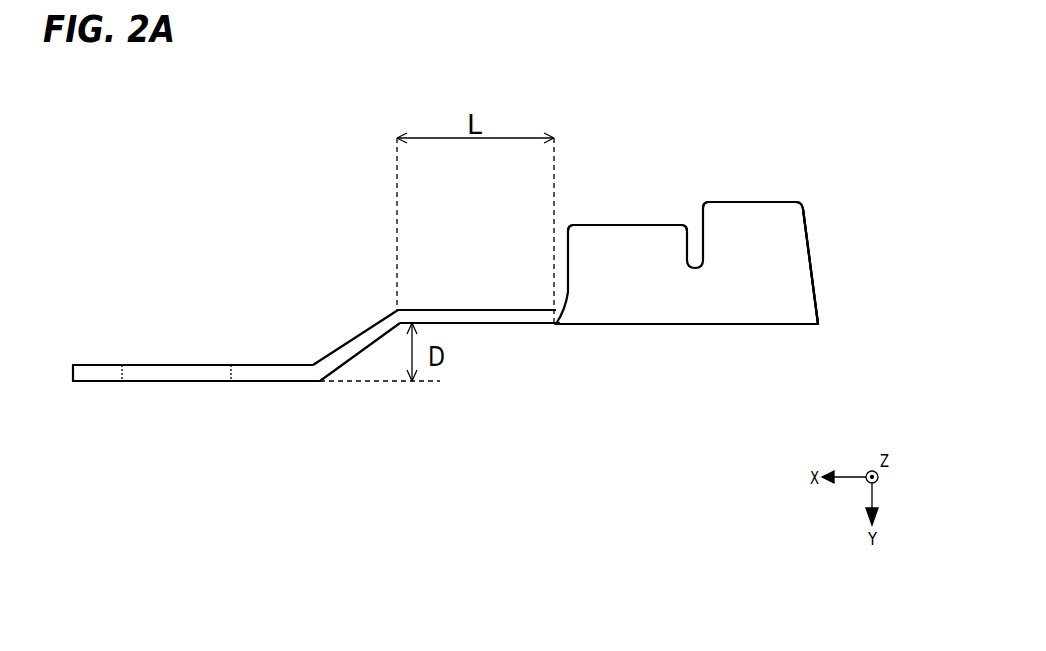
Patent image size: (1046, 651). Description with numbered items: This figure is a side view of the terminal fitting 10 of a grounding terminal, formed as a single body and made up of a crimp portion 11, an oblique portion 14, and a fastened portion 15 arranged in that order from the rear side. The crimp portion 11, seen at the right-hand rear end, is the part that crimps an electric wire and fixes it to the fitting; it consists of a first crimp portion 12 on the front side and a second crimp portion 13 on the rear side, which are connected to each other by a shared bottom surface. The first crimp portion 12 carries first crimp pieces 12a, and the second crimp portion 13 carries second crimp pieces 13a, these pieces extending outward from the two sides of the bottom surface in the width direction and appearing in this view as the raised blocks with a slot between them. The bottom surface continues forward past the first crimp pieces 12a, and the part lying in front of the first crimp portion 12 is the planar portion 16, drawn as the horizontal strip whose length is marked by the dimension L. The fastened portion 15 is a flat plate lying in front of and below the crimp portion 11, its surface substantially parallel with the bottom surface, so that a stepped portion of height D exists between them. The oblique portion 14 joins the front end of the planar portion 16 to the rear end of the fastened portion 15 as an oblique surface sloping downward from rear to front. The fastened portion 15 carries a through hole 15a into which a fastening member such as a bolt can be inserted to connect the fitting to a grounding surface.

The terminal fitting 10 is at (824, 140).
The crimp portion 11 is at (750, 130).
The first crimp portion 12 is at (637, 223).
The first crimp pieces 12a is at (623, 252).
The second crimp portion 13 is at (740, 202).
The second crimp pieces 13a is at (783, 247).
The oblique portion 14 is at (358, 342).
The fastened portion 15 is at (95, 363).
The through hole 15a is at (165, 381).
The planar portion 16 is at (473, 307).